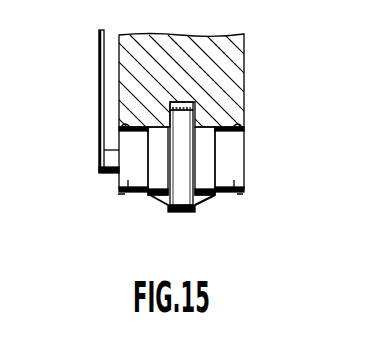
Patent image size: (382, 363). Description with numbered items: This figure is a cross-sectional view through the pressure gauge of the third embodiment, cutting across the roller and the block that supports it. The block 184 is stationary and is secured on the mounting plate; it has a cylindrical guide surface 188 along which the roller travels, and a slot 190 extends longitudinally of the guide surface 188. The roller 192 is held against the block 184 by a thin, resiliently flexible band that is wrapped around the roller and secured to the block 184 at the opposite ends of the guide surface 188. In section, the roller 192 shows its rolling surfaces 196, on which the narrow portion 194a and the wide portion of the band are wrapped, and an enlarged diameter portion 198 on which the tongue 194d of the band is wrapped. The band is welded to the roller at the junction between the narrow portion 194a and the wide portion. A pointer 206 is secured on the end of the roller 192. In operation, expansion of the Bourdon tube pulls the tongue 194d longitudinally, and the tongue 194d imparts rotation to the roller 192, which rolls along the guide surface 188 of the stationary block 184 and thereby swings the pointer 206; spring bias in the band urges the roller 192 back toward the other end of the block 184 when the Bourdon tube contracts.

The block 184 is at (237, 57).
The pointer 206 is at (98, 53).
The cylindrical guide surface 188 is at (127, 128).
The slot 190 is at (195, 107).
The roller 192 is at (248, 158).
The tongue 194d is at (183, 103).
The narrow portion 194a is at (158, 205).
The rolling surfaces 196 is at (128, 193).
The enlarged diameter portion 198 is at (180, 215).